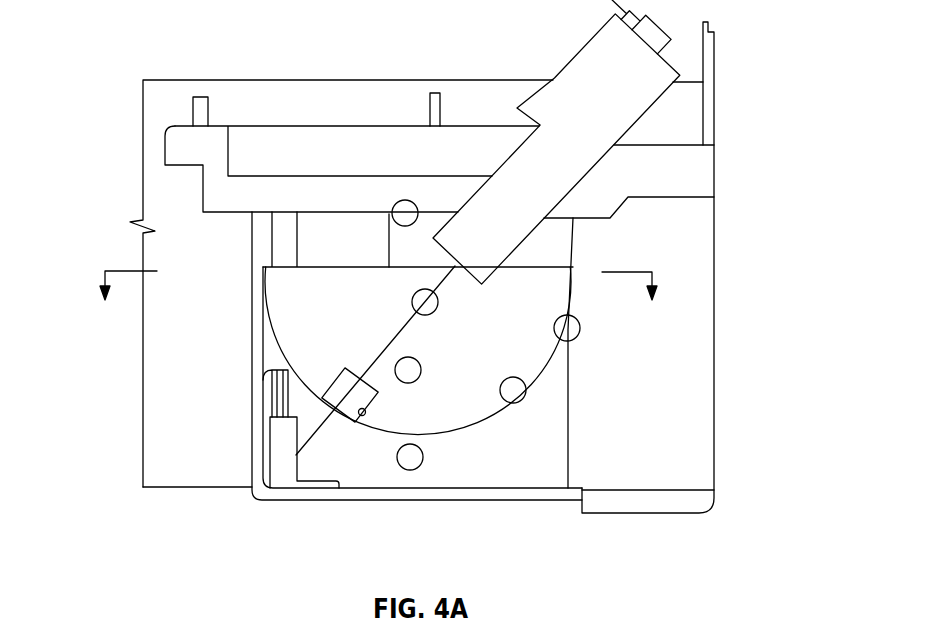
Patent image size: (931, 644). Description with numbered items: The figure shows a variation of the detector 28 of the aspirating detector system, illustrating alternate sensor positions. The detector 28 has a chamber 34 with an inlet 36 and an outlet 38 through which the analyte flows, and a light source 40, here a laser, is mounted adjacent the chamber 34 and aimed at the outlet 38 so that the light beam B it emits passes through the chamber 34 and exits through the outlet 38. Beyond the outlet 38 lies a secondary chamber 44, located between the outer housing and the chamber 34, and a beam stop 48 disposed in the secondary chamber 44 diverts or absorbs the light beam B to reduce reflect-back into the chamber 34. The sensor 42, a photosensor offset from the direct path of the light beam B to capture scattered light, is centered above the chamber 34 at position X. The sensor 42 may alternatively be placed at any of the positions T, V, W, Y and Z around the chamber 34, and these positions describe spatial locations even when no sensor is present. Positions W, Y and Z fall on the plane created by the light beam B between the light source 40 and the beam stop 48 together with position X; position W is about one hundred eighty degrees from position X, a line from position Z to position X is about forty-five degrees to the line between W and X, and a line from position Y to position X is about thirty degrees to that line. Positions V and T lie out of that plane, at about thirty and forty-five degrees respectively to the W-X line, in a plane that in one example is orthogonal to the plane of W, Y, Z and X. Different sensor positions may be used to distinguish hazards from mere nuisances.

The detector 28 is at (322, 502).
The chamber 34 is at (487, 409).
The inlet 36 is at (330, 259).
The outlet 38 is at (361, 416).
The light source 40 is at (664, 90).
The sensor 42 is at (393, 212).
The secondary chamber 44 is at (452, 482).
The beam stop 48 is at (283, 468).
The position X is at (398, 202).
The position T is at (412, 303).
The light beam B is at (455, 268).
The position V is at (408, 383).
The position W is at (401, 468).
The position Y is at (521, 404).
The position Z is at (579, 334).